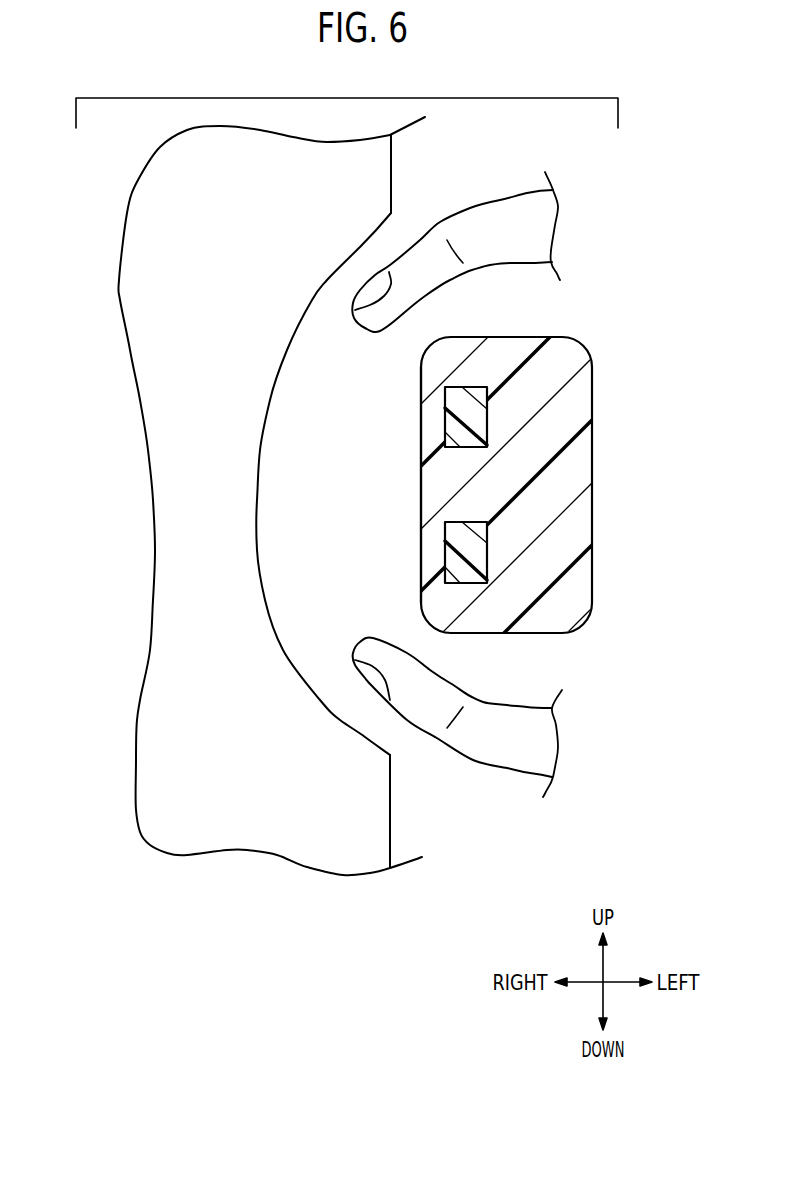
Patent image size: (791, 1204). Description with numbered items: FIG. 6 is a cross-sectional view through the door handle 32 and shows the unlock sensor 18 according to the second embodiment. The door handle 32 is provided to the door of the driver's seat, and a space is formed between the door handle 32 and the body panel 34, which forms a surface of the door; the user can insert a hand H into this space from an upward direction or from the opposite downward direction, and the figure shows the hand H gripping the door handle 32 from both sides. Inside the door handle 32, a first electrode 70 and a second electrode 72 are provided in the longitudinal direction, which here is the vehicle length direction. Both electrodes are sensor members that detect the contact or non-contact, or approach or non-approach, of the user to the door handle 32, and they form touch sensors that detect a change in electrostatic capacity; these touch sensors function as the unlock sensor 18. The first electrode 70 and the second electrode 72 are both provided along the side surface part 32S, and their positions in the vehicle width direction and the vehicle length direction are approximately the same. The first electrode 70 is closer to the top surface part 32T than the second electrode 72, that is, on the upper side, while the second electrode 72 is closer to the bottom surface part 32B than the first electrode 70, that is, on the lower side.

The unlock sensor 18 is at (421, 473).
The door handle 32 is at (593, 452).
The top surface part 32T is at (500, 335).
The side surface part 32S is at (421, 506).
The bottom surface part 32B is at (532, 633).
The body panel 34 is at (390, 827).
The first electrode 70 is at (455, 420).
The second electrode 72 is at (455, 560).
The hand H is at (493, 202).